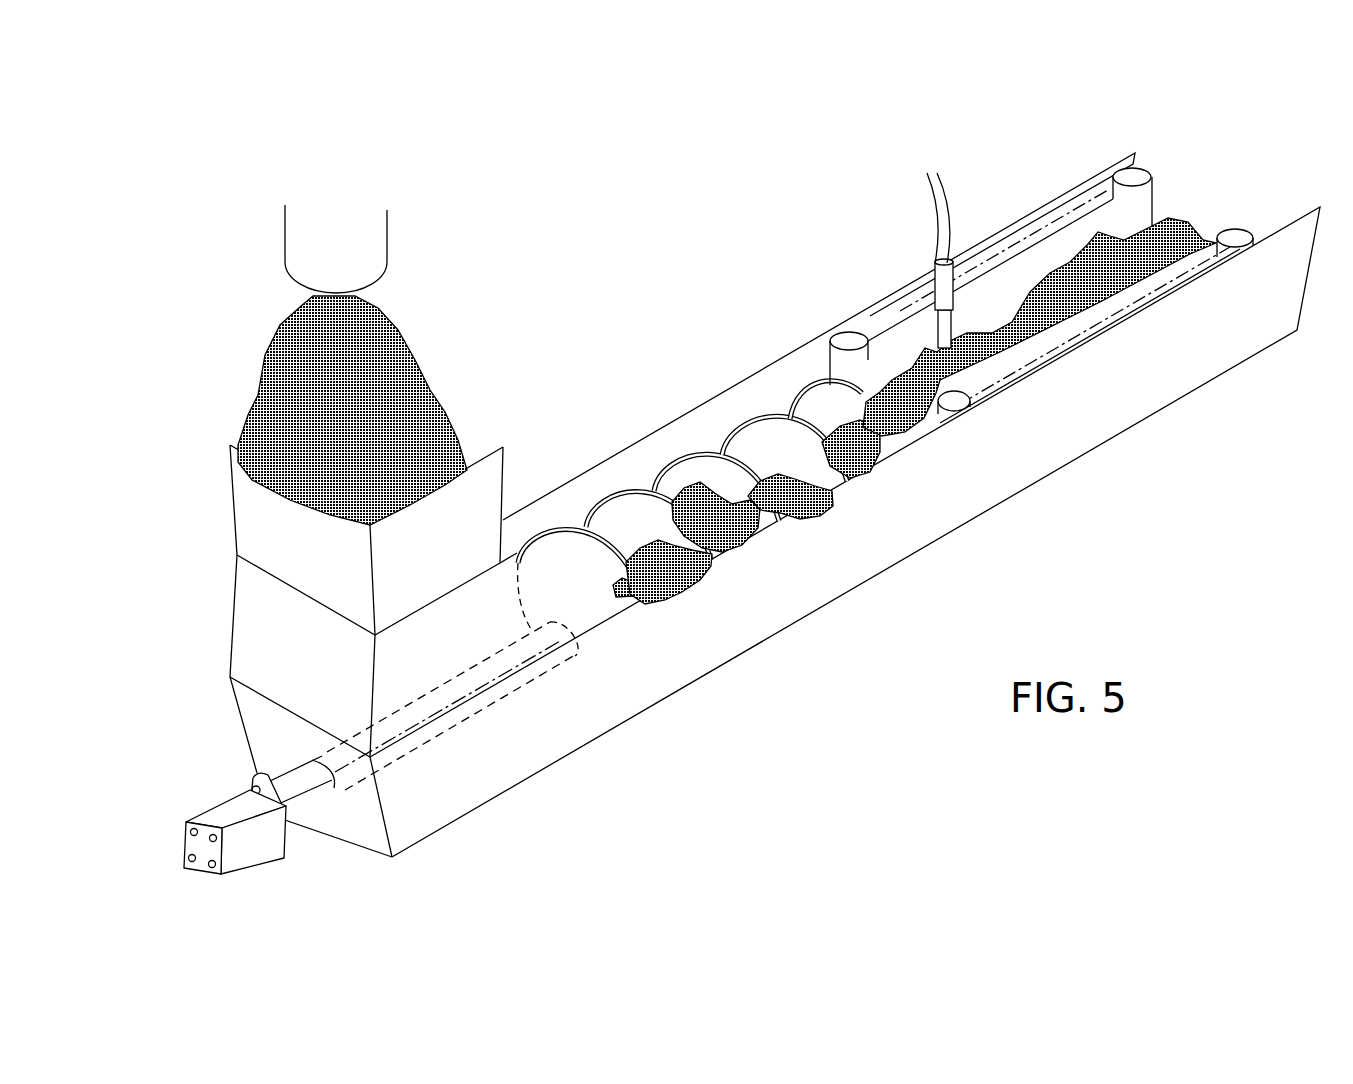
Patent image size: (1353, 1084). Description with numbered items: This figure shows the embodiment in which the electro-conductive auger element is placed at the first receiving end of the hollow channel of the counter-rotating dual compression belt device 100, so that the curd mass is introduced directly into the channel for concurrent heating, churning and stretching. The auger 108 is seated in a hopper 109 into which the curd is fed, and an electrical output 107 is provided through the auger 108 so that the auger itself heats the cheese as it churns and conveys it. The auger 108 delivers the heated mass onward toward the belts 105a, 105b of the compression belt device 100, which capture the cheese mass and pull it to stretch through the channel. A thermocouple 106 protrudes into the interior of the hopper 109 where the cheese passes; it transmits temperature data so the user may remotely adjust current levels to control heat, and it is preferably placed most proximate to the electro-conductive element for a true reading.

The counter-rotating dual compression belt device 100 is at (1151, 205).
The first belt 105a is at (1070, 188).
The second belt 105b is at (1208, 257).
The thermocouple 106 is at (935, 290).
The electrical output 107 is at (222, 797).
The auger 108 is at (686, 462).
The hopper 109 is at (1058, 441).